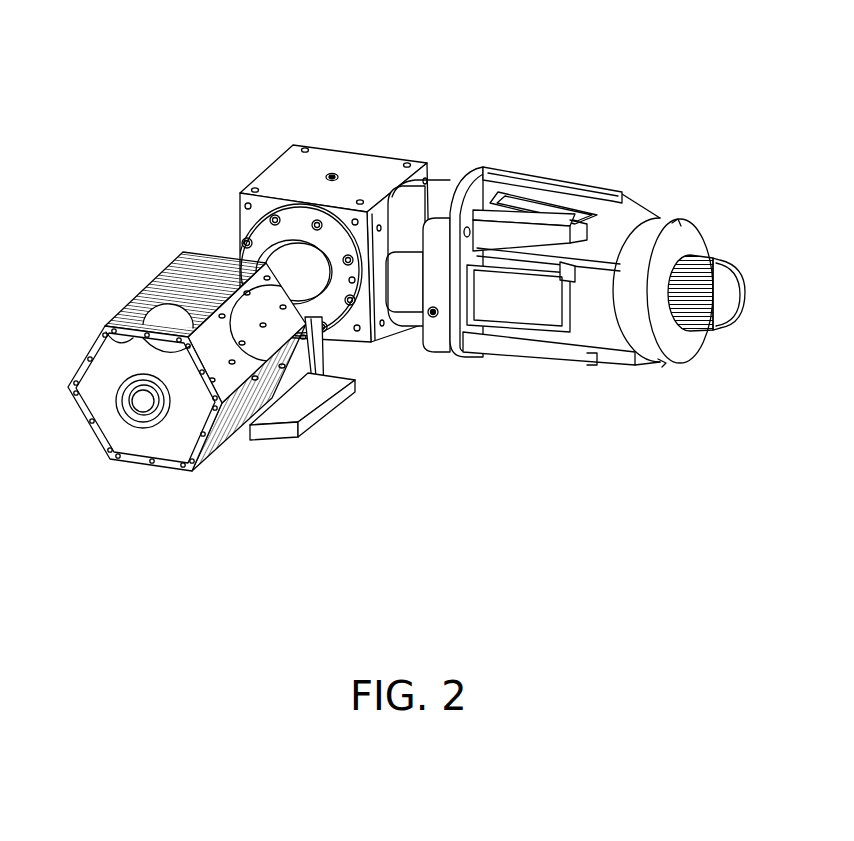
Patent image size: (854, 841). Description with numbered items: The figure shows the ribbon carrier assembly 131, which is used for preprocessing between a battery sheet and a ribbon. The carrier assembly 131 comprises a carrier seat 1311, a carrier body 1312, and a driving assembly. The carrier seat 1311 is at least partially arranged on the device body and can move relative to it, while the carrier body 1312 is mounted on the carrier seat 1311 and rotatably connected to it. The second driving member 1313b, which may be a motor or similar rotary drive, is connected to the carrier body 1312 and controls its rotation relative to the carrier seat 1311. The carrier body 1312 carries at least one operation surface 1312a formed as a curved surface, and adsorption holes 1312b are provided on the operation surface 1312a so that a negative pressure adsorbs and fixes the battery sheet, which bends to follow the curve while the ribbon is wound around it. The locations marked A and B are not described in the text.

The carrier assembly 131 is at (417, 100).
The carrier seat 1311 is at (302, 404).
The carrier body 1312 is at (178, 433).
The operation surface 1312a is at (247, 435).
The adsorption holes 1312b is at (222, 288).
The second driving member 1313b is at (518, 300).
The surface A is at (108, 338).
The surface B is at (313, 355).